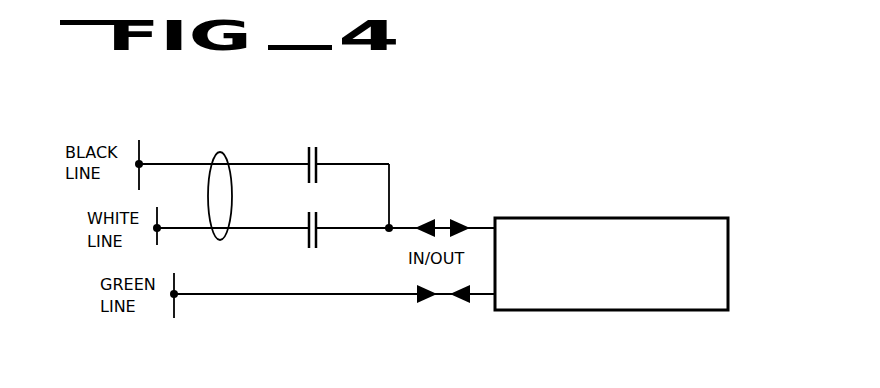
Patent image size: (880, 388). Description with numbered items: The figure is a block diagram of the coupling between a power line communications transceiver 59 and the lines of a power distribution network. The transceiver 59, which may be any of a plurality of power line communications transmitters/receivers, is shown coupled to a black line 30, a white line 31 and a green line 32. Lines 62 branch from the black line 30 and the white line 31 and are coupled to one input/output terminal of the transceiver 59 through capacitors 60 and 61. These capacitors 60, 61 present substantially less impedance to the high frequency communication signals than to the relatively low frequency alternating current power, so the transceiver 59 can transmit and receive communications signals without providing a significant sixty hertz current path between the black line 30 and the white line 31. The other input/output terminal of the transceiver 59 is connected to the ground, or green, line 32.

The black line 30 is at (143, 152).
The white line 31 is at (160, 238).
The green line 32 is at (177, 305).
The transceiver 59 is at (691, 217).
The capacitor 60 is at (321, 155).
The capacitor 61 is at (321, 222).
The lines 62 is at (227, 154).